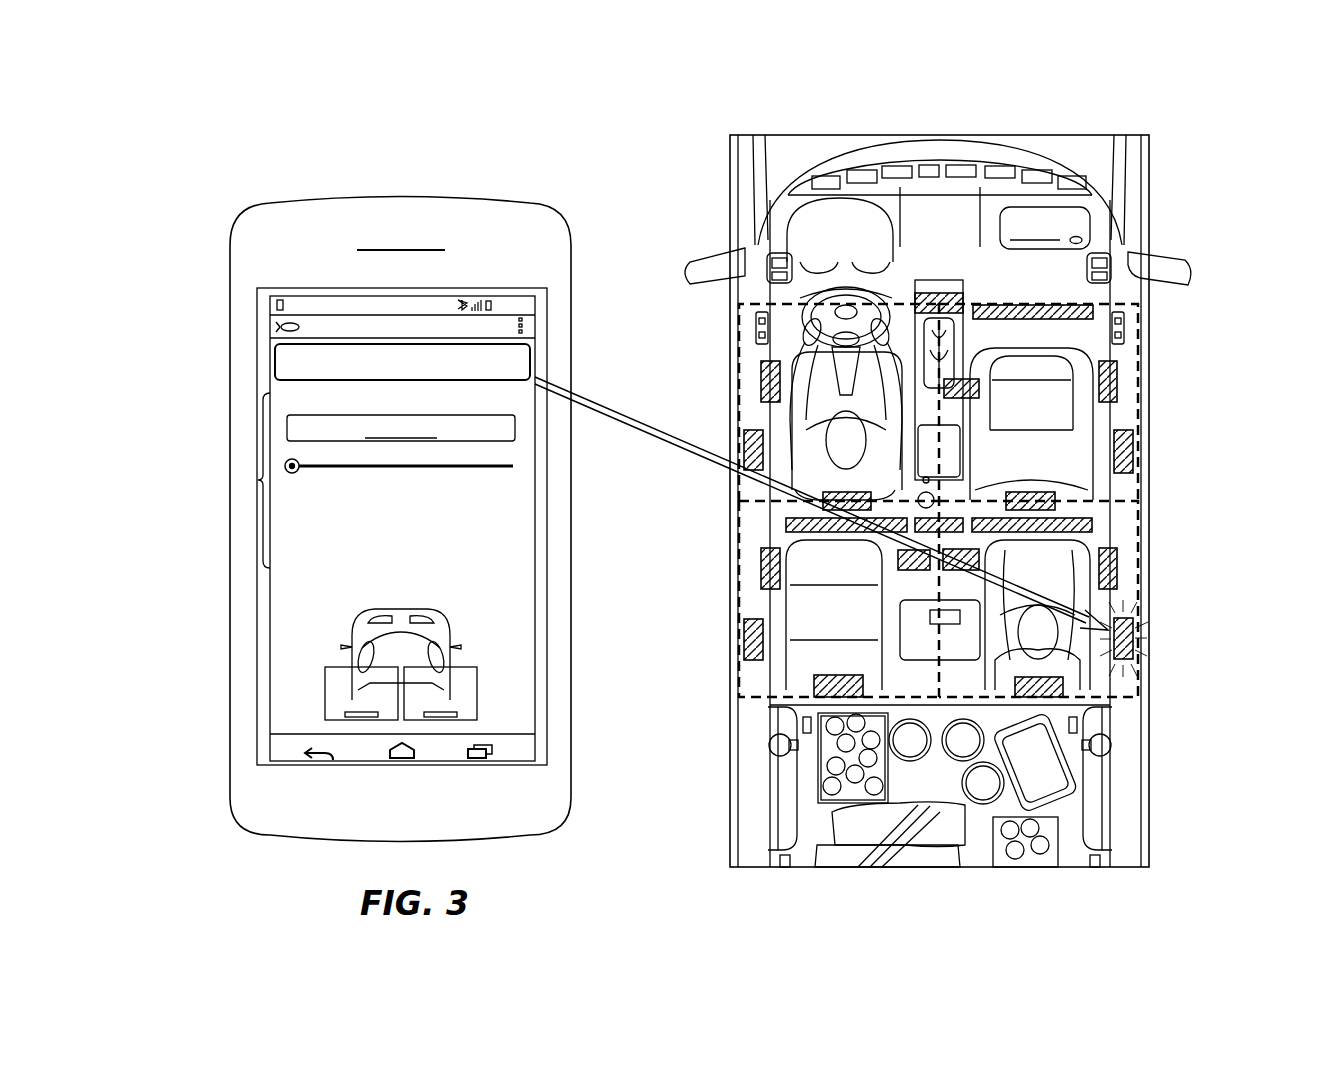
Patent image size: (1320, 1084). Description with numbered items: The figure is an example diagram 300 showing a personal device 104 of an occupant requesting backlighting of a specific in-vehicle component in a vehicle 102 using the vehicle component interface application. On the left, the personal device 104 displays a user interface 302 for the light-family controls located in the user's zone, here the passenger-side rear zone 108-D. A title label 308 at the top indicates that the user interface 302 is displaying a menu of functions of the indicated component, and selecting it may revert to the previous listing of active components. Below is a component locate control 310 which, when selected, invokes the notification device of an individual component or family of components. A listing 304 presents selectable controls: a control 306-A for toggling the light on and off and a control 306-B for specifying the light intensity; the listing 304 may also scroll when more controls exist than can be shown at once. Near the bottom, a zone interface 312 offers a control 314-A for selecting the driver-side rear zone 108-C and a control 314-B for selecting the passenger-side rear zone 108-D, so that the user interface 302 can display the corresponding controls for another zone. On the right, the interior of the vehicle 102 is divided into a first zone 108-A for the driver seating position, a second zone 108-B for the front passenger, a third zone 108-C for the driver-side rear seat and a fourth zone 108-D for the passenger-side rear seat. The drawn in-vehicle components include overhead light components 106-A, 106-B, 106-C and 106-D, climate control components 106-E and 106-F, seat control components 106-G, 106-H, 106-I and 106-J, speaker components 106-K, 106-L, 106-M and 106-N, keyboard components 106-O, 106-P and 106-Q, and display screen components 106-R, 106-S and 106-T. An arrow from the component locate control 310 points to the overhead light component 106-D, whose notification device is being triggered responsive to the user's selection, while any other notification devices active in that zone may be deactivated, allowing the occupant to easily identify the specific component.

The diagram 300 is at (294, 114).
The vehicle 102 is at (728, 190).
The personal device 104 is at (262, 207).
The user interface 302 is at (270, 610).
The listing 304 is at (258, 480).
The control 306-A is at (515, 424).
The control 306-B is at (520, 466).
The title label 308 is at (270, 320).
The component locate control 310 is at (275, 362).
The zone interface 312 is at (353, 632).
The control 314-A is at (327, 706).
The control 314-B is at (477, 706).
The overhead light in-vehicle component 106-A is at (744, 442).
The overhead light in-vehicle component 106-B is at (744, 640).
The overhead light in-vehicle component 106-C is at (1133, 455).
The overhead light in-vehicle component 106-D is at (1133, 638).
The climate control in-vehicle component 106-E is at (952, 293).
The climate control in-vehicle component 106-F is at (935, 518).
The seat control in-vehicle component 106-G is at (759, 380).
The seat control in-vehicle component 106-H is at (759, 568).
The seat control in-vehicle component 106-I is at (1117, 383).
The seat control in-vehicle component 106-J is at (1117, 572).
The speaker in-vehicle component 106-K is at (832, 492).
The speaker in-vehicle component 106-L is at (852, 676).
The speaker in-vehicle component 106-M is at (1030, 492).
The speaker in-vehicle component 106-N is at (1035, 677).
The keyboard in-vehicle component 106-O is at (980, 392).
The keyboard in-vehicle component 106-P is at (898, 565).
The keyboard in-vehicle component 106-Q is at (960, 570).
The display screen in-vehicle component 106-R is at (1048, 305).
The display screen in-vehicle component 106-S is at (826, 532).
The display screen in-vehicle component 106-T is at (1080, 518).
The first zone 108-A is at (739, 345).
The second zone 108-B is at (1140, 350).
The third zone 108-C is at (740, 532).
The fourth zone 108-D is at (1140, 532).